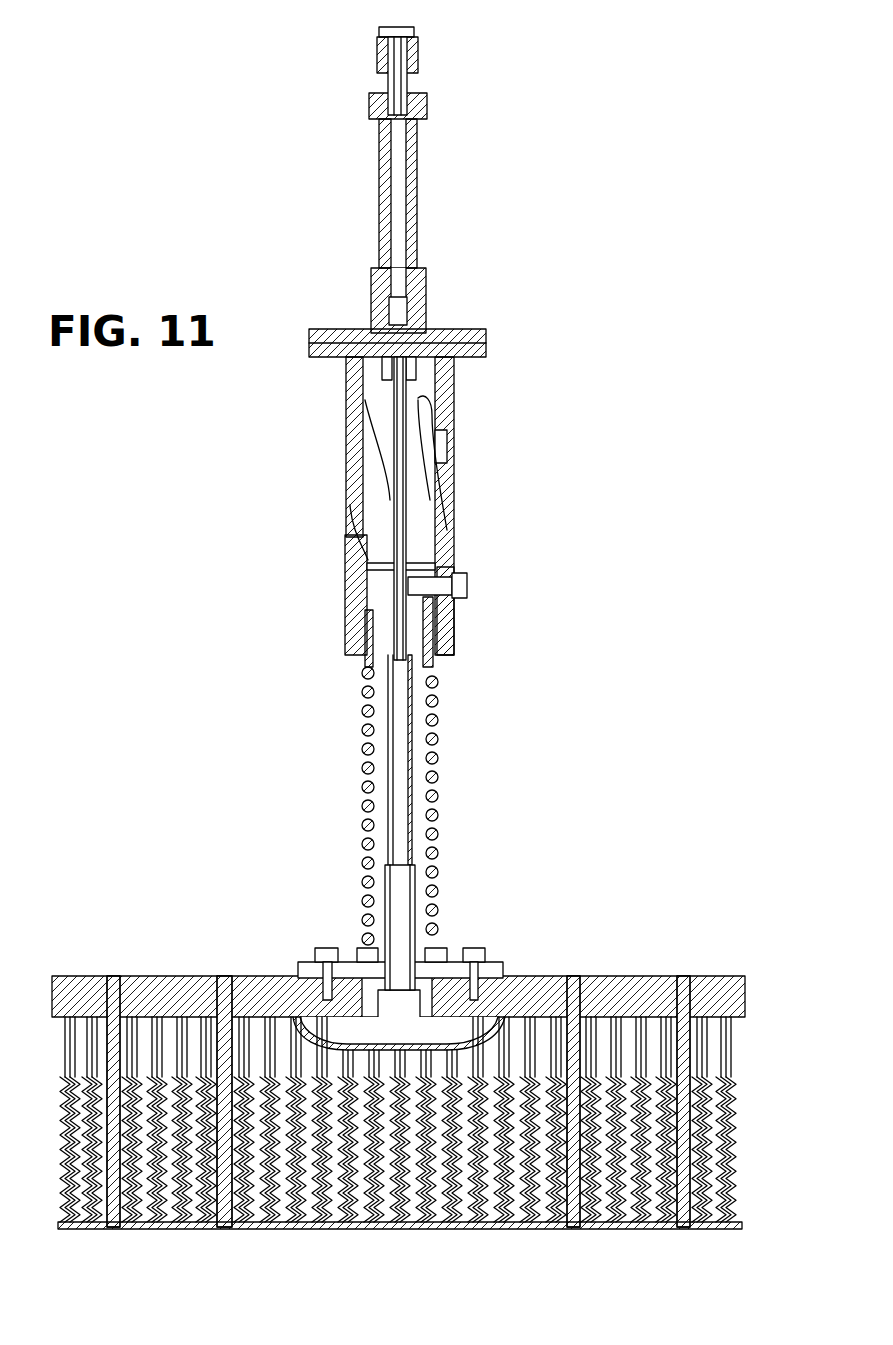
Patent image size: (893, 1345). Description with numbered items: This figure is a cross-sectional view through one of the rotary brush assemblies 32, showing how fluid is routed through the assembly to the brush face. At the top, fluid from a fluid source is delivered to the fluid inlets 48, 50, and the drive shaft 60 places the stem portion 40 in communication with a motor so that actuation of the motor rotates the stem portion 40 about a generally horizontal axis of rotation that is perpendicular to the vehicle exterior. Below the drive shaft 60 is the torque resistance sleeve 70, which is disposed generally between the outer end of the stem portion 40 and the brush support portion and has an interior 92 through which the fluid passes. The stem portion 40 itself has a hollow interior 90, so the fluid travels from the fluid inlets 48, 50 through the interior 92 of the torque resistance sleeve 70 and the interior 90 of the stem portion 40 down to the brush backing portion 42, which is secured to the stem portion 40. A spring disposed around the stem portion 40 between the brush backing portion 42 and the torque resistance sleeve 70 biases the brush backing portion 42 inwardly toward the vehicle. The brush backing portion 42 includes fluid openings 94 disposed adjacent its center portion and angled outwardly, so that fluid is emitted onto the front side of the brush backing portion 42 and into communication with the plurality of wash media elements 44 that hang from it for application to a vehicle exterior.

The rotary brush assembly 32 is at (702, 888).
The stem portion 40 is at (437, 795).
The brush backing portion 42 is at (745, 990).
The wash media elements 44 is at (682, 1228).
The fluid inlet 48 is at (408, 82).
The fluid inlet 50 is at (397, 76).
The drive shaft 60 is at (418, 197).
The torque resistance sleeve 70 is at (400, 815).
The hollow interior 90 is at (417, 730).
The interior 92 is at (378, 490).
The fluid openings 94 is at (300, 1232).